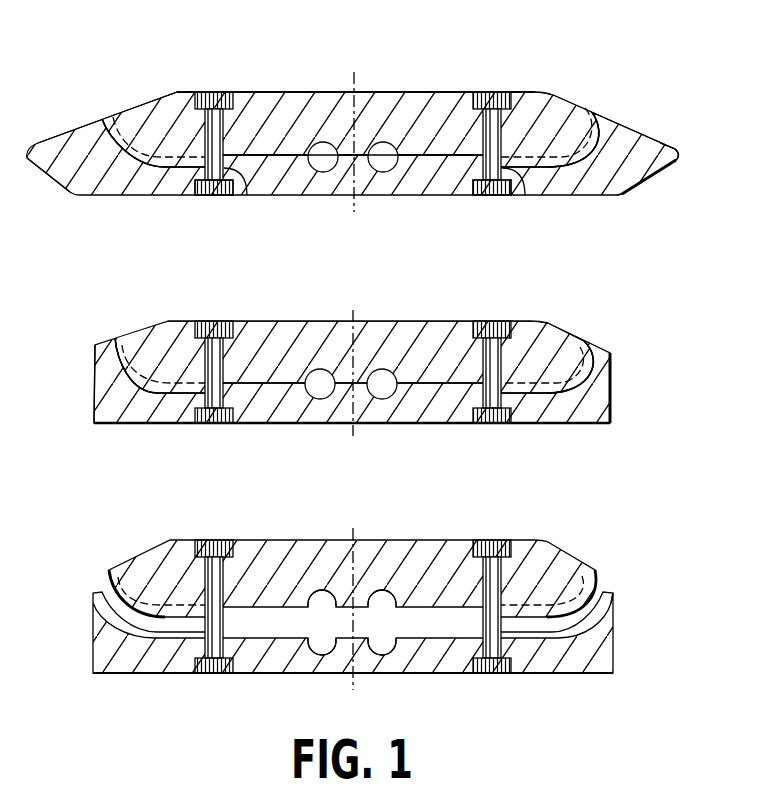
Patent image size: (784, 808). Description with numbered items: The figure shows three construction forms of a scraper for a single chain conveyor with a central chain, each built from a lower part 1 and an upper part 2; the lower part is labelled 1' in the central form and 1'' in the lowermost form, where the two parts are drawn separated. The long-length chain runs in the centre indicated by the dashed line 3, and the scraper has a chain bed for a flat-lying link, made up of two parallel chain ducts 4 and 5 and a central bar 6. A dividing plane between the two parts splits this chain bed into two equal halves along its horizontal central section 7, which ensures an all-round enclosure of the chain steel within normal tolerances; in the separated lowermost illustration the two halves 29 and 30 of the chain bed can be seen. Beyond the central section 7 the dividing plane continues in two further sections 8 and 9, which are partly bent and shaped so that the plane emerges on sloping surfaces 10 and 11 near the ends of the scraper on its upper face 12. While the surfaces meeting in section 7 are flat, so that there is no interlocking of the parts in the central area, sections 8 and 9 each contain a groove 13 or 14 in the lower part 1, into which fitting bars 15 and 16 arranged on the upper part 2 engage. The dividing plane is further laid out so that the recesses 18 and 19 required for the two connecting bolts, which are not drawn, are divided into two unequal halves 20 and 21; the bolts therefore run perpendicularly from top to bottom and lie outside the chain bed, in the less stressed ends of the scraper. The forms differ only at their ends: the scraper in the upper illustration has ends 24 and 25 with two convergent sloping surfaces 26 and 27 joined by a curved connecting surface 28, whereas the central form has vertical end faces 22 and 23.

The lower part 1 is at (353, 168).
The lower body (second embodiment) 1' is at (352, 401).
The lower body (third embodiment) 1'' is at (353, 654).
The upper part 2 is at (421, 110).
The dashed line 3 is at (357, 86).
The chain duct 4 is at (384, 165).
The chain duct 5 is at (323, 165).
The central bar 6 is at (359, 178).
The horizontal central section of the dividing plane 7 is at (449, 158).
The section of the dividing plane 8 is at (563, 152).
The section of the dividing plane 9 is at (129, 139).
The sloping surface 10 is at (624, 117).
The sloping surface 11 is at (59, 132).
The upper face of the scraper 12 is at (310, 84).
The groove 13 is at (600, 150).
The groove 14 is at (134, 166).
The bar 15 is at (597, 144).
The bar 16 is at (106, 124).
The recess 18 is at (215, 192).
The recess 19 is at (505, 191).
The half of recess 20 is at (231, 169).
The half of recess 21 is at (221, 92).
The vertical end face 22 is at (614, 390).
The vertical end face 23 is at (93, 387).
The scraper end 24 is at (639, 163).
The scraper end 25 is at (74, 166).
The convergent sloping surface 26 is at (657, 182).
The convergent sloping surface 27 is at (669, 140).
The curved connecting surface 28 is at (682, 154).
The half of the chain bed 29 is at (385, 604).
The half of the chain bed 30 is at (322, 647).